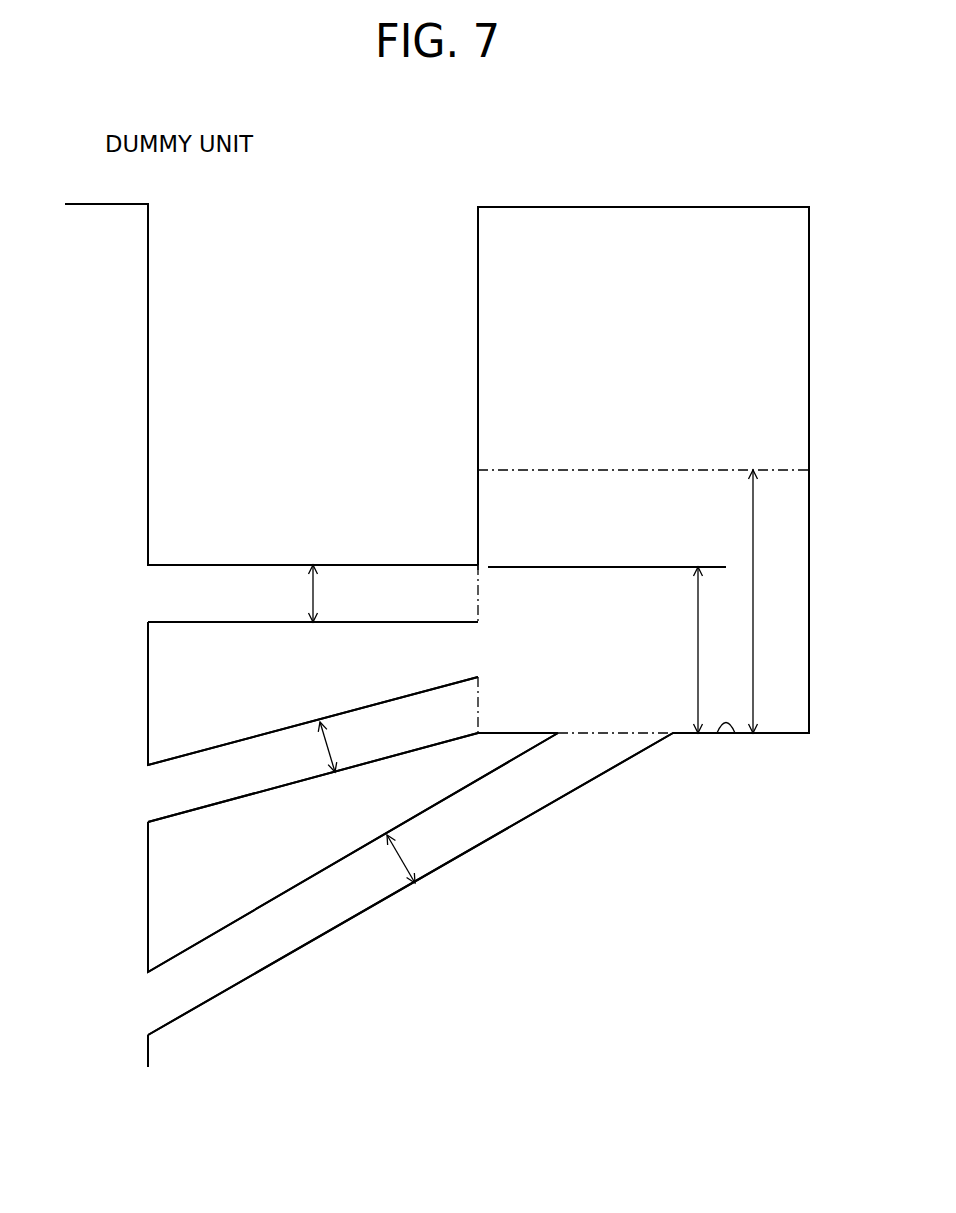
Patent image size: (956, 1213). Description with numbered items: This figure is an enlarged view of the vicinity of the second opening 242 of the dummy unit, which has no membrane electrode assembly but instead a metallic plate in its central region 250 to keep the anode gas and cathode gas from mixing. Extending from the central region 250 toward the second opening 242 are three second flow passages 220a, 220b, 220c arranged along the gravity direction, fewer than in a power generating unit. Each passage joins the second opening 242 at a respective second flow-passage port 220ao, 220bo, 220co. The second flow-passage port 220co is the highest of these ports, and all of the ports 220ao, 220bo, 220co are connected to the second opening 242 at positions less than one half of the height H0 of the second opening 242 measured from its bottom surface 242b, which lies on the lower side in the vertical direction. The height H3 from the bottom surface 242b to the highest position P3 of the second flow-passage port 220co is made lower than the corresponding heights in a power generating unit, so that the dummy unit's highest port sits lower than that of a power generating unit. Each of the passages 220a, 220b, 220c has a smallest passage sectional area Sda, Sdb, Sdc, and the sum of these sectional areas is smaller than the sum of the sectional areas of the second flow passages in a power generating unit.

The central region 250 is at (100, 640).
The second opening 242 is at (658, 360).
The bottom surface 242b is at (731, 724).
The second flow passage 220a is at (332, 925).
The second flow passage 220b is at (228, 792).
The second flow passage 220c is at (245, 603).
The second flow-passage port 220ao is at (592, 738).
The second flow-passage port 220bo is at (478, 722).
The second flow-passage port 220co is at (478, 603).
The highest position P3 is at (476, 560).
The passage sectional area Sda is at (383, 860).
The passage sectional area Sdb is at (308, 747).
The passage sectional area Sdc is at (288, 593).
The height H3 is at (610, 650).
The height H0 is at (704, 601).